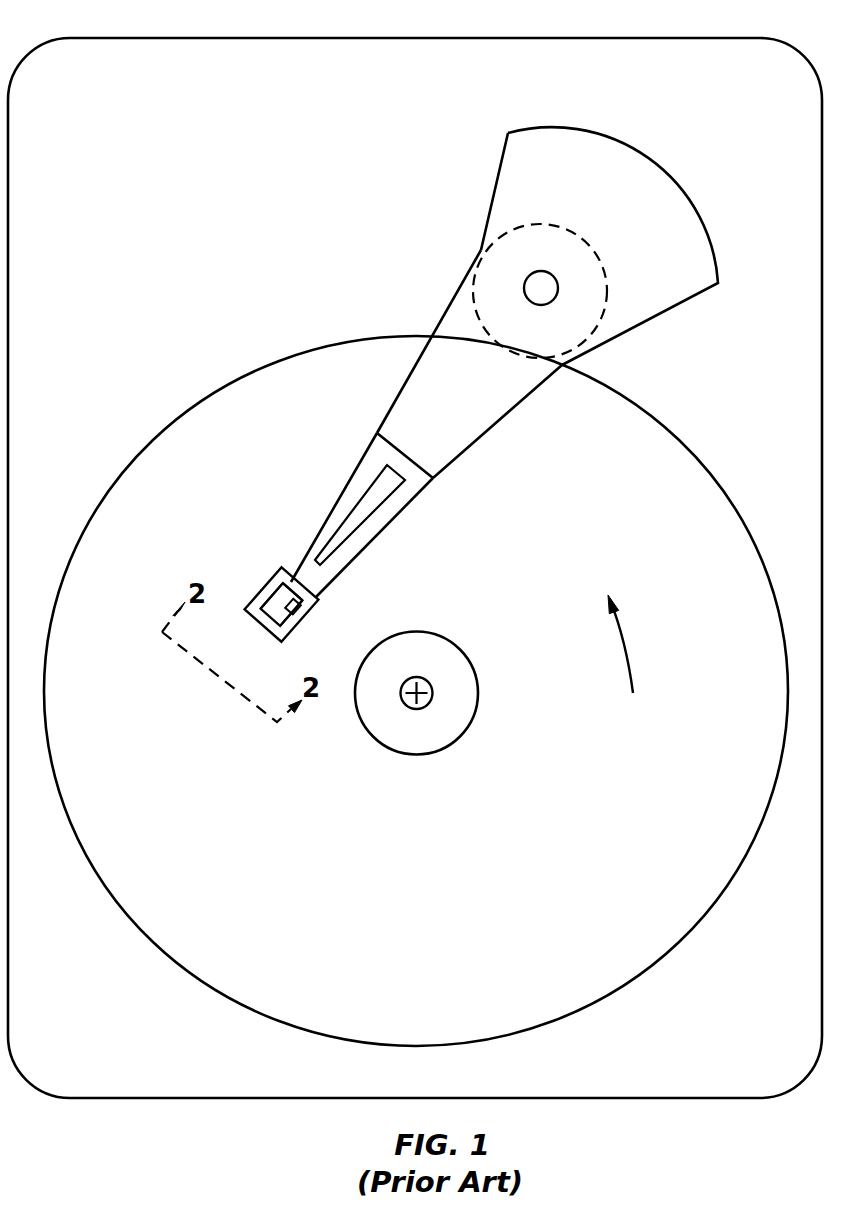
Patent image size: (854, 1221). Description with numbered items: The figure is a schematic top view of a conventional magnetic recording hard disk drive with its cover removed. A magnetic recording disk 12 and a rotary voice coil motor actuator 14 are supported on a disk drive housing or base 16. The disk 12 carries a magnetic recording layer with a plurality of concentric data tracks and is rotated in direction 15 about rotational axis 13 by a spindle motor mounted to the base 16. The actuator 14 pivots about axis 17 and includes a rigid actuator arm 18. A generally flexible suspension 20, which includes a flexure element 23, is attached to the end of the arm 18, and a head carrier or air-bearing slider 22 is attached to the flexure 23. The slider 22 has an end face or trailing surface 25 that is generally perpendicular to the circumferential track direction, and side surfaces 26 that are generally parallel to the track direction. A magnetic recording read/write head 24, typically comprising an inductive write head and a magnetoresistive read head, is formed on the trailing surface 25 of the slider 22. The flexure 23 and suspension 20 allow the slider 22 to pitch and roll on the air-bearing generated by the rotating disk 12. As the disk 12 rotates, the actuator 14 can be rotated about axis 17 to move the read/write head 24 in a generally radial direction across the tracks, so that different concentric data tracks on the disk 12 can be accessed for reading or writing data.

The magnetic recording disk 12 is at (424, 951).
The rotational axis 13 is at (430, 683).
The rotary voice coil motor actuator 14 is at (652, 156).
The direction of disk rotation 15 is at (632, 660).
The disk drive housing or base 16 is at (692, 38).
The pivot axis 17 is at (523, 288).
The rigid actuator arm 18 is at (407, 383).
The suspension 20 is at (363, 470).
The air-bearing slider 22 is at (270, 575).
The flexure element 23 is at (305, 612).
The magnetic recording read/write head 24 is at (288, 632).
The trailing surface 25 is at (252, 622).
The side surfaces 26 is at (262, 598).